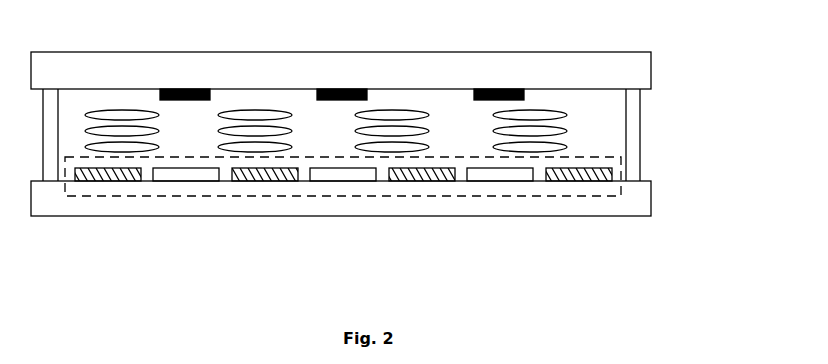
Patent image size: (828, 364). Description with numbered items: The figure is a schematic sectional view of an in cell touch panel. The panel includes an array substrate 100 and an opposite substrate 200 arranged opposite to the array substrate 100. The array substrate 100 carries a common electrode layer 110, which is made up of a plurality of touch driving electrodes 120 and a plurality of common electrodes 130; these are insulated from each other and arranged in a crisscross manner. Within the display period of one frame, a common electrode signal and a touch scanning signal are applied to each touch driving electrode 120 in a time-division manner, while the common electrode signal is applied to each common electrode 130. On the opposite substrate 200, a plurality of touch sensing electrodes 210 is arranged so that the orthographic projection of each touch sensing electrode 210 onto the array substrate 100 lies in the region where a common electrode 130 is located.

The array substrate 100 is at (375, 186).
The common electrode layer 110 is at (343, 209).
The touch driving electrode 120 is at (334, 209).
The common electrode 130 is at (343, 209).
The opposite substrate 200 is at (374, 59).
The touch sensing electrode 210 is at (342, 57).